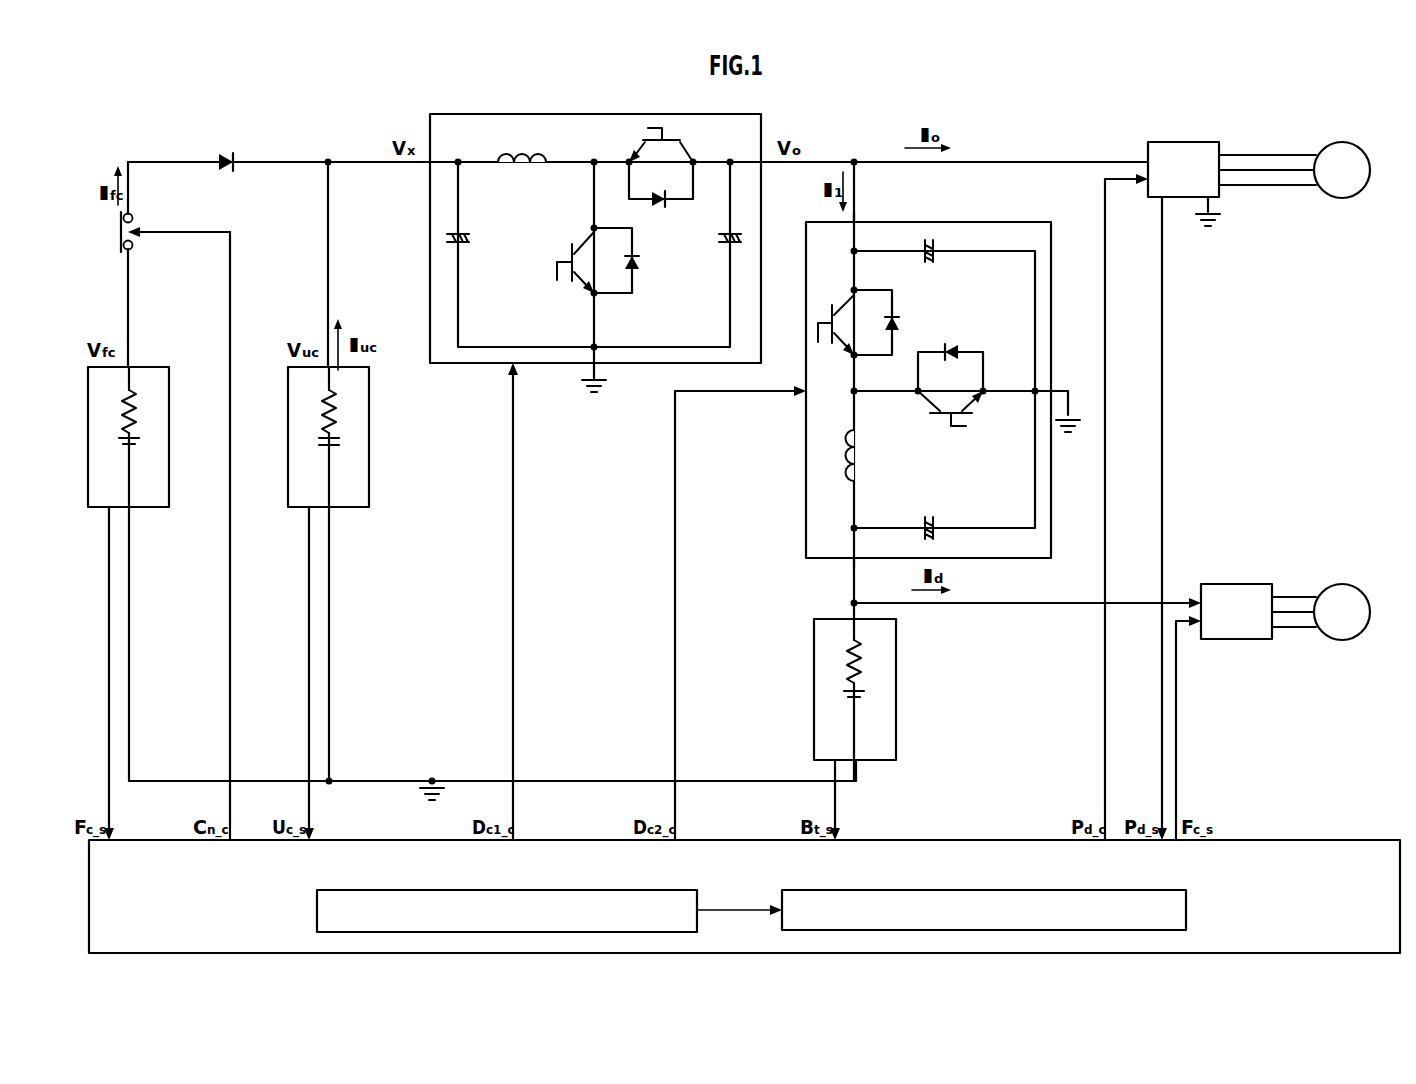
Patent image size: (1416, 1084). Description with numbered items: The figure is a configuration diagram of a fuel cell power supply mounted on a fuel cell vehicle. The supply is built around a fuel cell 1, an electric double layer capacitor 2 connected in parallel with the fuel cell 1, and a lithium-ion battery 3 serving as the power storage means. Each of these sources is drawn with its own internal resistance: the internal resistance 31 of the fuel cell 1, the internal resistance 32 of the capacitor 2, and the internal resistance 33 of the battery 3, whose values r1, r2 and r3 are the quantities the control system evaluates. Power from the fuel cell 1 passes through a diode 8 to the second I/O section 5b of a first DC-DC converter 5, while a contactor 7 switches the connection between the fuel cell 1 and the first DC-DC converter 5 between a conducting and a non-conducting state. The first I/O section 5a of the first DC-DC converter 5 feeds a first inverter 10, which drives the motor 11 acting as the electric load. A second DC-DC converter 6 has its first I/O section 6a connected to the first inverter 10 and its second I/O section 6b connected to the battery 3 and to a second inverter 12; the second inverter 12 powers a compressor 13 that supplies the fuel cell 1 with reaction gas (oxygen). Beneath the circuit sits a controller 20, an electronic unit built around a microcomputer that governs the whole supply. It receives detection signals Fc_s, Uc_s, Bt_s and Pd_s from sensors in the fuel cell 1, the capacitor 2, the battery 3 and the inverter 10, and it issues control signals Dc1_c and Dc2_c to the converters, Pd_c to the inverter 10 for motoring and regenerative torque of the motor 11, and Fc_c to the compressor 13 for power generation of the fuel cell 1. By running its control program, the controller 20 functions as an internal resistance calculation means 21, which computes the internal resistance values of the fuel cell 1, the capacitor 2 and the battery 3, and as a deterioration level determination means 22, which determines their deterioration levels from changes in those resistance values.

The fuel cell 1 is at (143, 437).
The electric double layer capacitor 2 is at (344, 437).
The lithium-ion battery 3 is at (870, 700).
The first DC-DC converter 5 is at (594, 114).
The first I/O section 5a is at (762, 165).
The second I/O section 5b is at (434, 165).
The second DC-DC converter 6 is at (1051, 258).
The first I/O section 6a is at (854, 220).
The second I/O section 6b is at (854, 560).
The contactor 7 is at (123, 242).
The diode 8 is at (229, 158).
The first inverter 10 is at (1198, 142).
The motor 11 is at (1342, 144).
The second inverter 12 is at (1251, 584).
The compressor 13 is at (1342, 586).
The controller 20 is at (747, 878).
The internal resistance calculation means 21 is at (604, 883).
The deterioration level determination means 22 is at (1080, 883).
The internal resistance 31 is at (138, 415).
The internal resistance 32 is at (338, 415).
The internal resistance 33 is at (862, 664).